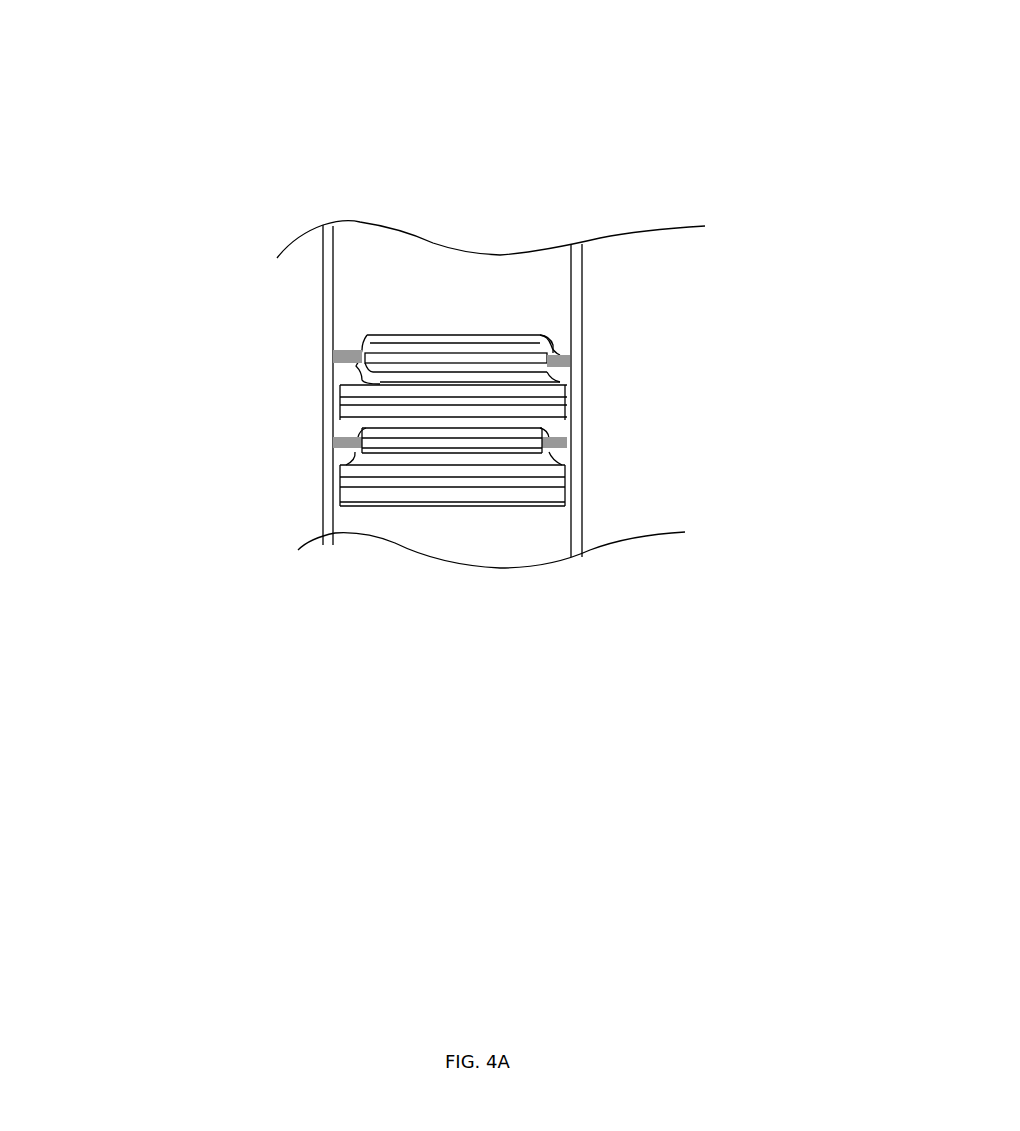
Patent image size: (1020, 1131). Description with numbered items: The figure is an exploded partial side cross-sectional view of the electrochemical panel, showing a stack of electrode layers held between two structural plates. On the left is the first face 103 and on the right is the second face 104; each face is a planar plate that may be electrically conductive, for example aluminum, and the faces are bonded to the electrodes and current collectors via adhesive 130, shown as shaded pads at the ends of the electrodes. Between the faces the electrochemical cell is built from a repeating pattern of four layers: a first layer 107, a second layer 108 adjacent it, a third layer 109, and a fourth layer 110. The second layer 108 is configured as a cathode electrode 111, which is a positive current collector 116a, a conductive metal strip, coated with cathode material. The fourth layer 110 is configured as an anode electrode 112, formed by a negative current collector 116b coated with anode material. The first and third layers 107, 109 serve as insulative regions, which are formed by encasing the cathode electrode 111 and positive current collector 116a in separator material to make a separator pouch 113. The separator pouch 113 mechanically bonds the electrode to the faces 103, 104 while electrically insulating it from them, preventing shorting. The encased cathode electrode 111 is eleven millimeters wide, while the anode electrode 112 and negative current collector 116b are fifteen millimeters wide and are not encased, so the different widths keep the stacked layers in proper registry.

The first face 103 is at (323, 287).
The second face 104 is at (577, 287).
The first layer 107 is at (368, 340).
The second layer 108 is at (380, 356).
The third layer 109 is at (378, 378).
The fourth layer 110 is at (338, 402).
The cathode electrode 111 is at (417, 347).
The anode electrode 112 is at (497, 472).
The separator pouch 113 is at (545, 333).
The positive current collector 116a is at (442, 357).
The negative current collector 116b is at (505, 482).
The adhesive 130 is at (572, 357).